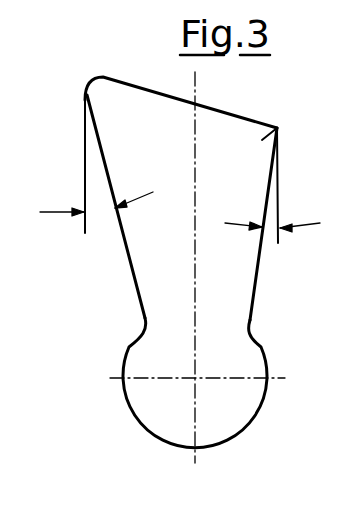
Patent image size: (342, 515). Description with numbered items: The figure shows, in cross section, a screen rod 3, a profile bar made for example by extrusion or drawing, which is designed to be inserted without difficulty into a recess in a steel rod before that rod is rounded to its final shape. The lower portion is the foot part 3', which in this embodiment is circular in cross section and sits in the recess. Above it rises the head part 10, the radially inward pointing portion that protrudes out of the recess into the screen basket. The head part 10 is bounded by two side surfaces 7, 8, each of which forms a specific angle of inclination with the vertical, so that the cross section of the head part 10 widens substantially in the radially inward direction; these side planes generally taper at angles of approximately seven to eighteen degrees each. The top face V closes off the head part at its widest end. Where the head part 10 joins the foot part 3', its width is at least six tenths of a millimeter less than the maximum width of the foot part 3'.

The screen rod 3 is at (189, 259).
The foot part 3' is at (222, 383).
The side surface of the head part 7 is at (104, 168).
The side surface of the head part 8 is at (265, 185).
The head part 10 is at (277, 128).
The top face V is at (198, 97).